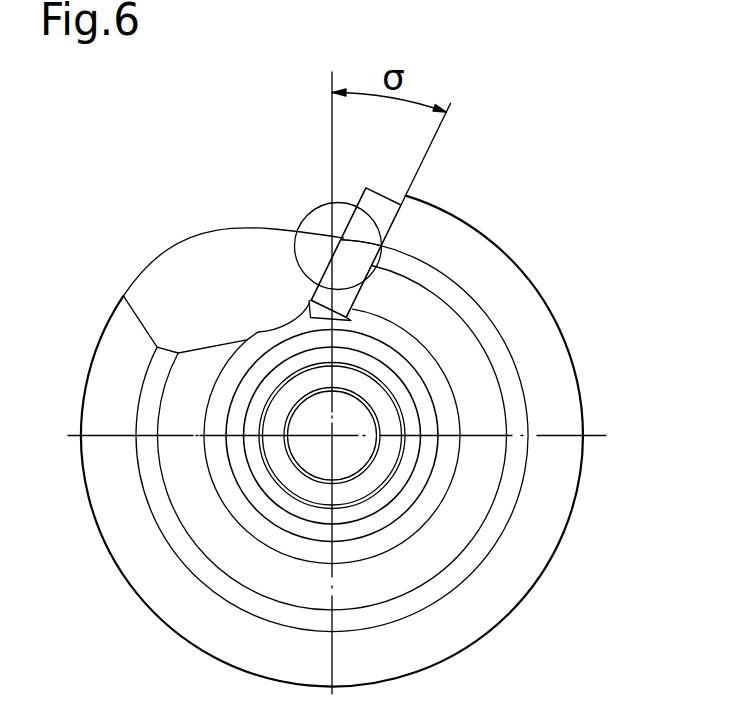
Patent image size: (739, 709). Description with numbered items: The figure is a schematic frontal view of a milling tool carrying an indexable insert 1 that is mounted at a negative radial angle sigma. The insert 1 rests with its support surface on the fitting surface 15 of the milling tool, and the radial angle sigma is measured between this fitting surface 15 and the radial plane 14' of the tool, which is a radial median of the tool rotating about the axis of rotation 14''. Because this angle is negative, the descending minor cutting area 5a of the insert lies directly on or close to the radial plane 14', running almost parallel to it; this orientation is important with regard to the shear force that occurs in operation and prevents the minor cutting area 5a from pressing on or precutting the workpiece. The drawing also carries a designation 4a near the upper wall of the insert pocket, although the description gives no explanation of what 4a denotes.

The indexable insert 1 is at (391, 189).
The fitting surface 15 is at (398, 212).
The recess wall 4a is at (356, 207).
The minor cutting area 5a is at (332, 243).
The radial plane 14' is at (425, 369).
The axis of rotation 14'' is at (454, 407).